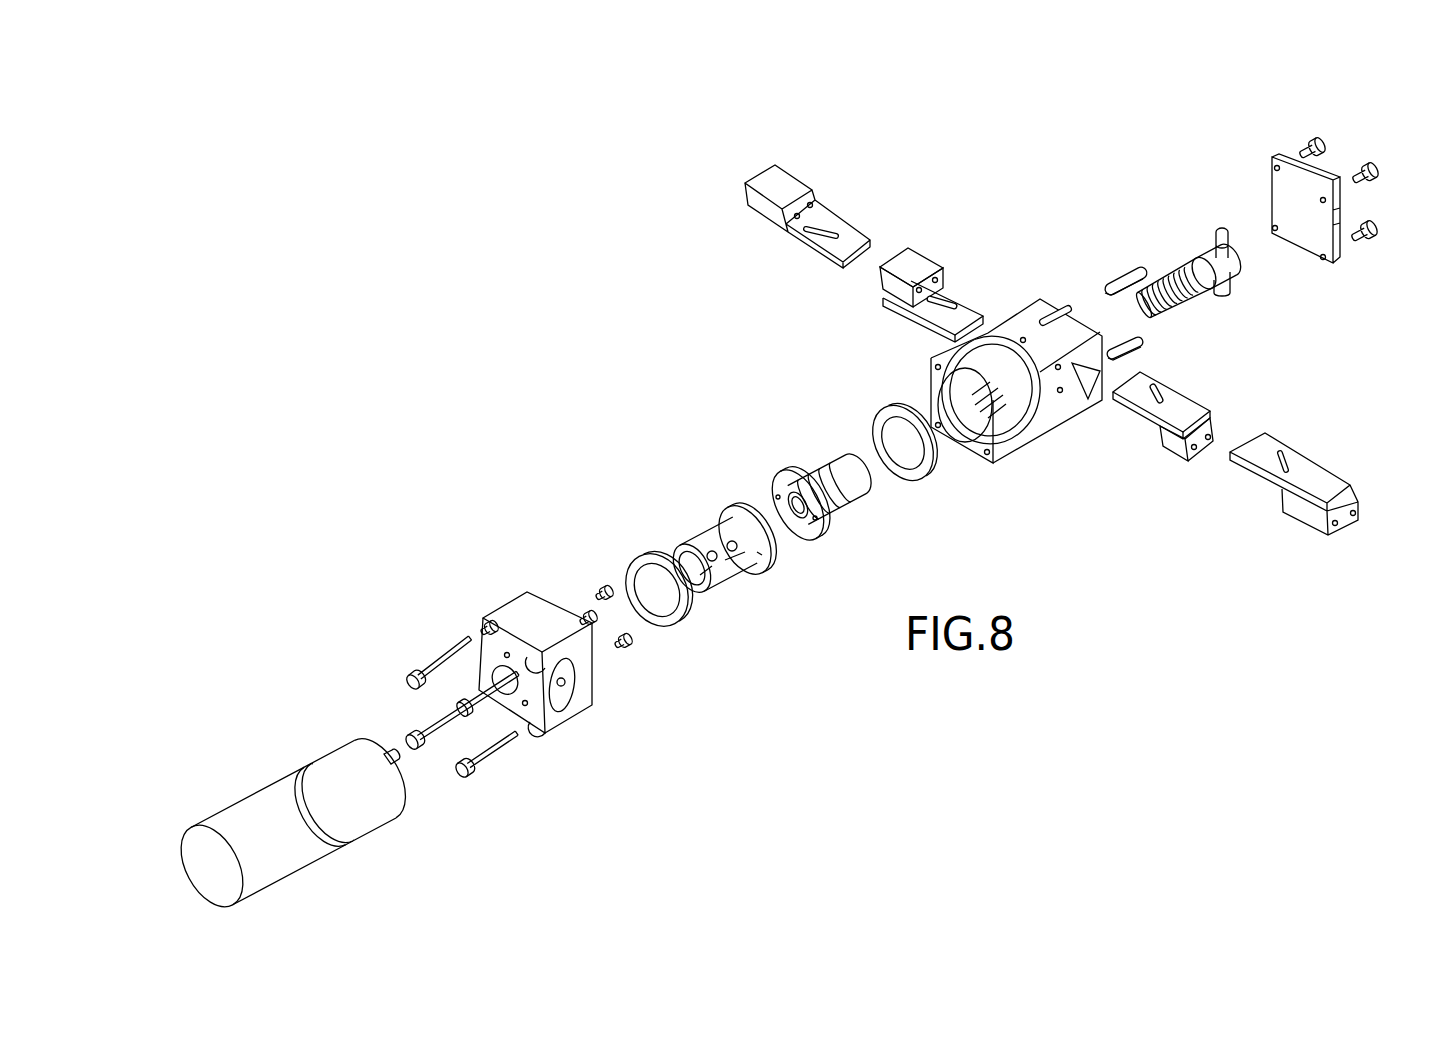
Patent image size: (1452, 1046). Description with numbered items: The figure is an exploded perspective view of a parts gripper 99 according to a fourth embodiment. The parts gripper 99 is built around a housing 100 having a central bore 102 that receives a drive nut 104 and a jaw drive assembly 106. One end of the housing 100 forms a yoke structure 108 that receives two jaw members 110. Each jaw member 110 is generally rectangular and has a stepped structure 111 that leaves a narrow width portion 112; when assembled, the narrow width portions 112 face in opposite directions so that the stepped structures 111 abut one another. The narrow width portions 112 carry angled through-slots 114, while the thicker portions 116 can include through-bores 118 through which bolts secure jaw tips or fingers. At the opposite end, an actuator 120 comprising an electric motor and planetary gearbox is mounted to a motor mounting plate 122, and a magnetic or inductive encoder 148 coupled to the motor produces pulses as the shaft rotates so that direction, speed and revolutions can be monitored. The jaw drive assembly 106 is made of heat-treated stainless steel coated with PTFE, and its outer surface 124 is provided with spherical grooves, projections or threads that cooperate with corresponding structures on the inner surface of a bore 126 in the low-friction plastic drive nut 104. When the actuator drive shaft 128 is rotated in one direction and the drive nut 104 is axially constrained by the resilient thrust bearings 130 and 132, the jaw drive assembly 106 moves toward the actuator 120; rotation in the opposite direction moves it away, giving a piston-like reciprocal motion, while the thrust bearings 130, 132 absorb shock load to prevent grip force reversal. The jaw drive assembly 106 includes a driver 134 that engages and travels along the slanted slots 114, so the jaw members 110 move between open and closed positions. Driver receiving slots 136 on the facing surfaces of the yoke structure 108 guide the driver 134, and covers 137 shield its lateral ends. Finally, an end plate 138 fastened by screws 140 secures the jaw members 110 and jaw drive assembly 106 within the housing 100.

The parts gripper 99 is at (960, 118).
The housing 100 is at (1028, 297).
The central bore 102 is at (962, 440).
The drive nut 104 is at (840, 497).
The jaw drive assembly 106 is at (1247, 286).
The yoke structure 108 is at (1090, 402).
The jaw members 110 is at (913, 262).
The stepped structure 111 is at (790, 230).
The narrow width portion 112 is at (921, 334).
The angled through-slots 114 is at (948, 291).
The thicker portions 116 is at (880, 302).
The through-bores 118 is at (938, 278).
The actuator 120 is at (328, 832).
The motor mounting plate 122 is at (535, 606).
The outer surface 124 is at (1180, 293).
The bore 126 is at (795, 522).
The actuator drive shaft 128 is at (398, 764).
The resilient thrust bearing 130 is at (670, 622).
The resilient thrust bearing 132 is at (910, 470).
The driver 134 is at (1212, 247).
The driver receiving slots 136 is at (1067, 317).
The covers 137 is at (1130, 272).
The end plate 138 is at (1305, 237).
The screws 140 is at (1312, 136).
The encoder 148 is at (268, 822).